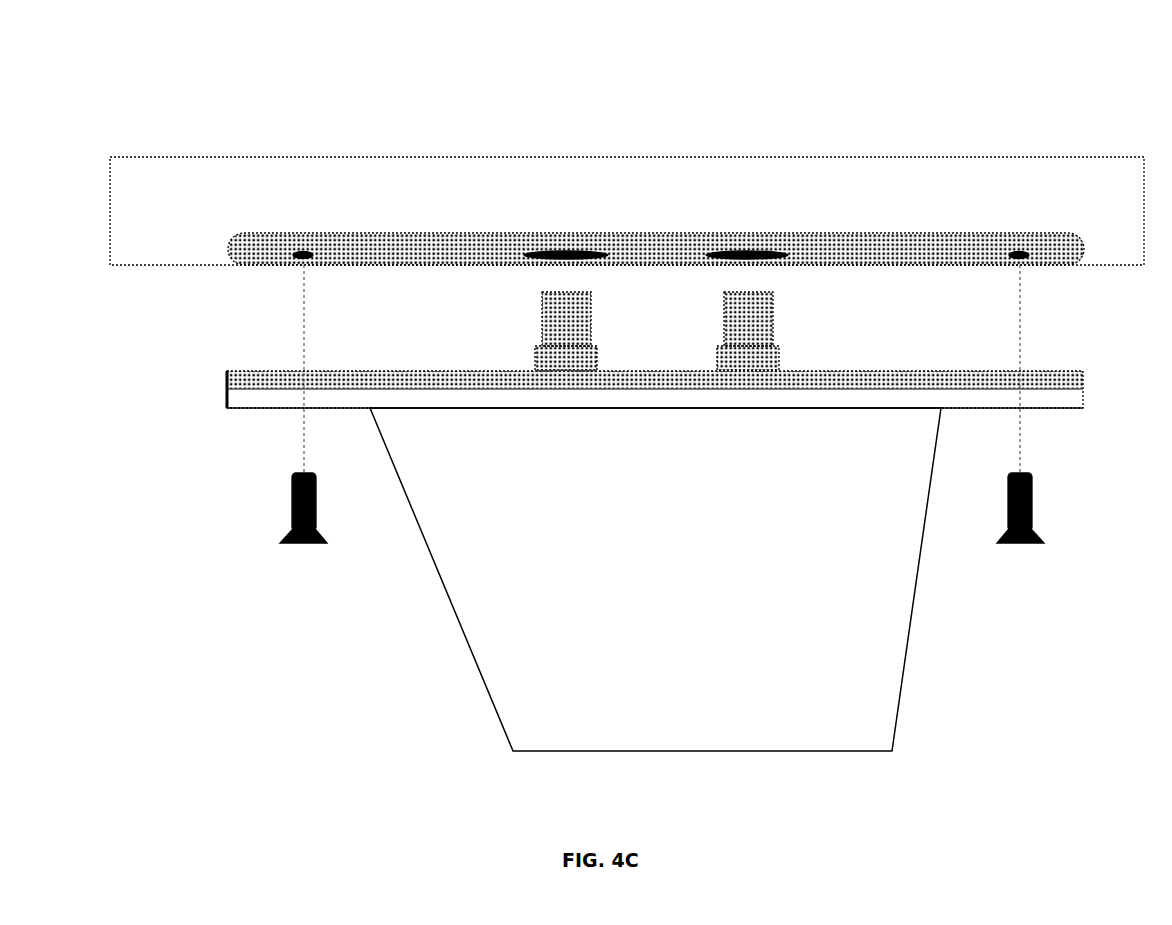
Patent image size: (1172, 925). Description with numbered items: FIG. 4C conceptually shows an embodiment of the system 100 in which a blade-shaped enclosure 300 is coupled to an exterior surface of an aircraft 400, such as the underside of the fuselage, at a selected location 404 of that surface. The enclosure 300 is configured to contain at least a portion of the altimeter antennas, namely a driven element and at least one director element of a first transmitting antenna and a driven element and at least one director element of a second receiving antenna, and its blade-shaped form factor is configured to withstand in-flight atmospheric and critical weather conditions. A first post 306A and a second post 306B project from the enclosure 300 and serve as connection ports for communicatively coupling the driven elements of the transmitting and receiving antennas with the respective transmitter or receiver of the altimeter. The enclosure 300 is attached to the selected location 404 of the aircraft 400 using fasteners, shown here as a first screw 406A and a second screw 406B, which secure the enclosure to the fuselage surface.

The system 100 is at (203, 88).
The aircraft 400 is at (1008, 167).
The selected location 404 is at (871, 266).
The first post 306A is at (592, 330).
The second post 306B is at (774, 327).
The enclosure 300 is at (852, 752).
The first screw 406A is at (306, 546).
The second screw 406B is at (1012, 546).